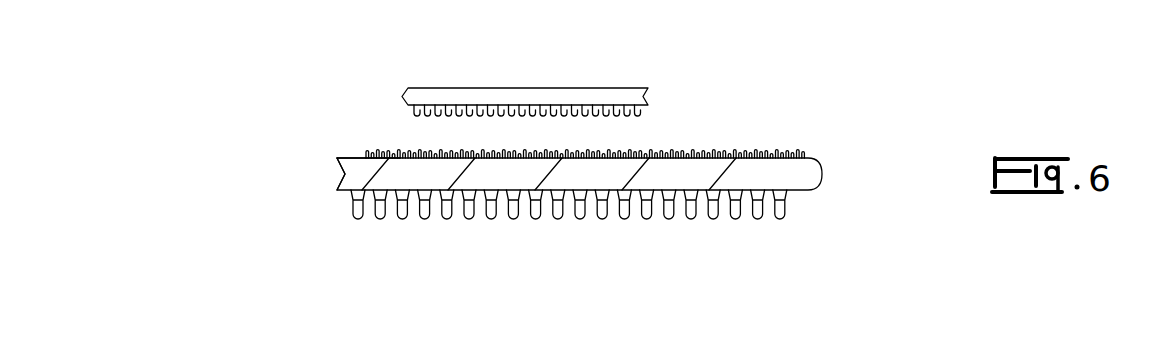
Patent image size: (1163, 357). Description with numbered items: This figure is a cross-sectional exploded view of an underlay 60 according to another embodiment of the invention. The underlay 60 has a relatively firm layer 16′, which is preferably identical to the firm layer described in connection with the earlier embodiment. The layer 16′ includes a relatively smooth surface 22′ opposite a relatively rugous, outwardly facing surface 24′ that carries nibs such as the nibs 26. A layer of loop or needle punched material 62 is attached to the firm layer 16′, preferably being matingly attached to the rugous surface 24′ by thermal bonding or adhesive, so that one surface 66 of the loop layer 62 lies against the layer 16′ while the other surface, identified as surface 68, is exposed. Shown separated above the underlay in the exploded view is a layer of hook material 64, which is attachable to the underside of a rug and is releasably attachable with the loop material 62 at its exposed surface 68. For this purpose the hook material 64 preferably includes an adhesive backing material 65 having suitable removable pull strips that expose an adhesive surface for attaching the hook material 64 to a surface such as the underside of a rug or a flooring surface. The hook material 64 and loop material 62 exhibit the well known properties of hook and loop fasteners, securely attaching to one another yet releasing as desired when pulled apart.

The underlay 60 is at (764, 112).
The relatively firm layer 16′ is at (822, 170).
The relatively smooth surface 22′ is at (816, 151).
The relatively rugous outwardly facing surface 24′ is at (808, 192).
The nibs 26 is at (734, 219).
The layer of loop or needle punched material 62 is at (363, 153).
The layer of hook material 64 is at (650, 104).
The adhesive backing material 65 is at (545, 88).
The one surface of the loop layer 66 is at (345, 174).
The exposed surface of the loop layer 68 is at (390, 152).